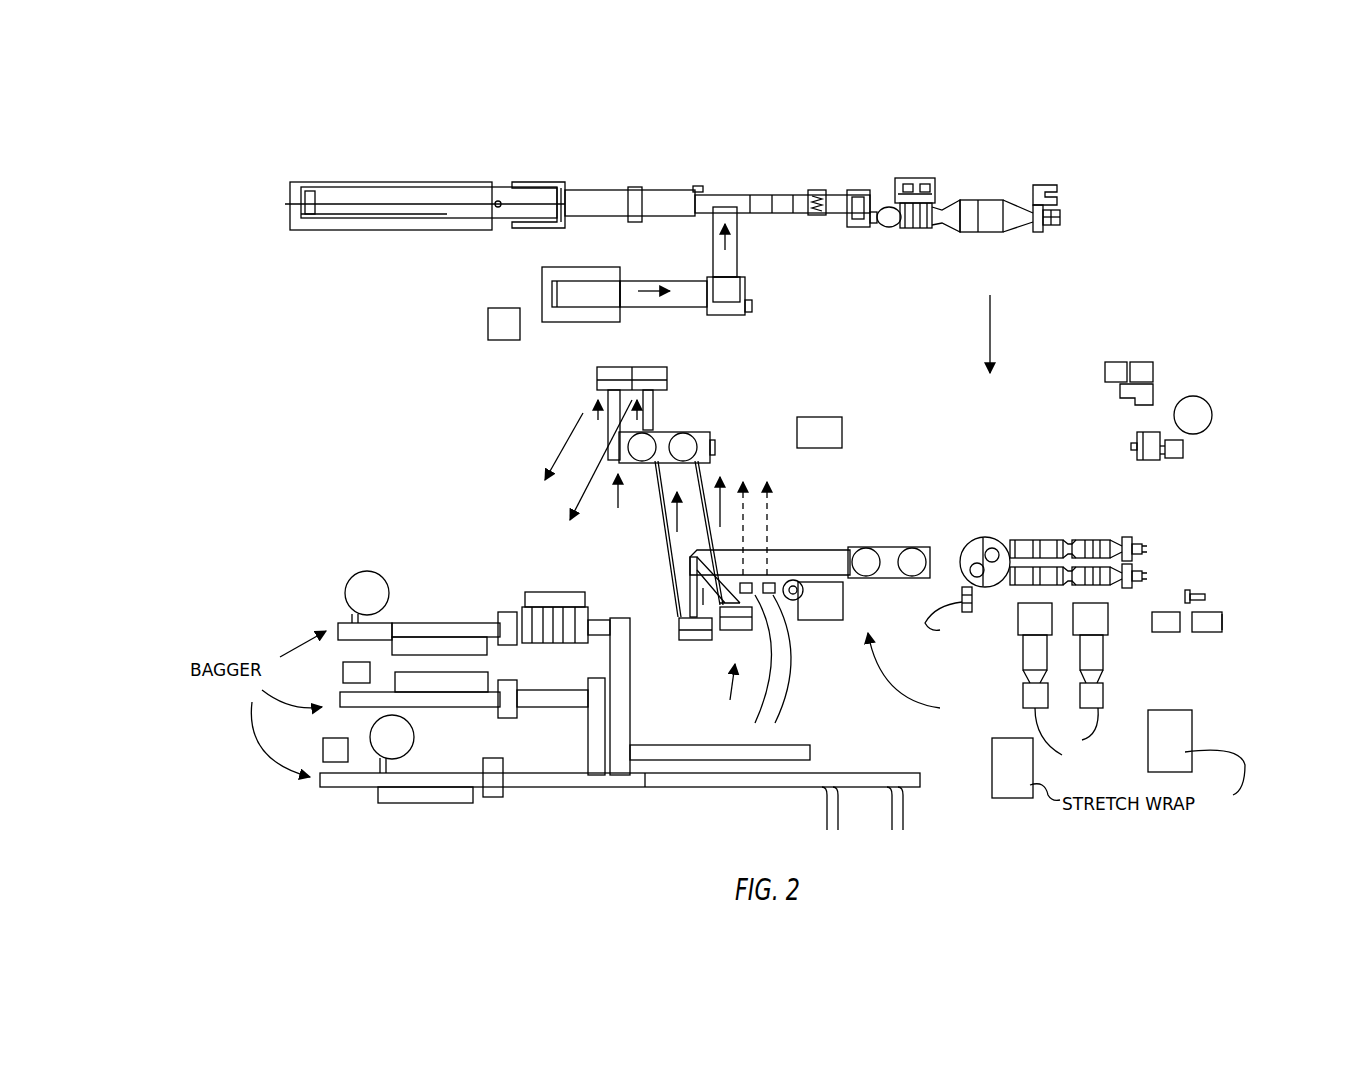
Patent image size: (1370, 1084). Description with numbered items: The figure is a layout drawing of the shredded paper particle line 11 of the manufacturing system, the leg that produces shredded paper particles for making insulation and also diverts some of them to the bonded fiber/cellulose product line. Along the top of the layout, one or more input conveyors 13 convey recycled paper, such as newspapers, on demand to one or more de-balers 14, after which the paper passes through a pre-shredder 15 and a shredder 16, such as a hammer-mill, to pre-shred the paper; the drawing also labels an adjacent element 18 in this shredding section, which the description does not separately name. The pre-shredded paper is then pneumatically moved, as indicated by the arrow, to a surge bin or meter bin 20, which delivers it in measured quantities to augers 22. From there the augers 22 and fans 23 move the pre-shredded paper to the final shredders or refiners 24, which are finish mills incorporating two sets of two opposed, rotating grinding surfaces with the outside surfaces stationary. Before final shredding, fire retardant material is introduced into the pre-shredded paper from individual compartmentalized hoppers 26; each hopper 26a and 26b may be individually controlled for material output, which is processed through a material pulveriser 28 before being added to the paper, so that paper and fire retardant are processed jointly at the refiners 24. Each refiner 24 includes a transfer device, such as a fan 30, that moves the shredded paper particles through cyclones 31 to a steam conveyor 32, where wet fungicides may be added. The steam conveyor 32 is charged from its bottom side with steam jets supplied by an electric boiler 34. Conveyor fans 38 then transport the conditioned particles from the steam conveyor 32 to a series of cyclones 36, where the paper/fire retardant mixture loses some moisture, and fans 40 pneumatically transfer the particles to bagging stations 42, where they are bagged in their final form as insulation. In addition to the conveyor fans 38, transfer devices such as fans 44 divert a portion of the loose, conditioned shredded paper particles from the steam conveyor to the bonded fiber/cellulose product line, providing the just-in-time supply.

The shredded paper particle line 11 is at (1134, 250).
The input conveyor 13 is at (462, 168).
The de-baler 14 is at (563, 168).
The pre-shredder 15 is at (802, 168).
The shredder 16 is at (901, 170).
The shredder fan 18 is at (989, 184).
The surge bin or meter bin 20 is at (988, 518).
The augers 22 is at (1070, 561).
The fans 23 is at (1152, 559).
The final shredders or refiners 24 is at (1006, 653).
The compartmentalized hoppers 26 is at (1215, 599).
The hopper 26a is at (1164, 598).
The hopper 26b is at (1223, 622).
The material pulveriser 28 is at (1209, 588).
The fan 30 is at (1066, 739).
The cyclones 31 is at (911, 543).
The steam conveyor 32 is at (798, 543).
The electric boiler 34 is at (827, 620).
The cyclones 36 is at (685, 411).
The conveyor fans 38 is at (689, 679).
The fans 40 is at (682, 371).
The bagging stations 42 is at (407, 577).
The fans 44 is at (771, 672).